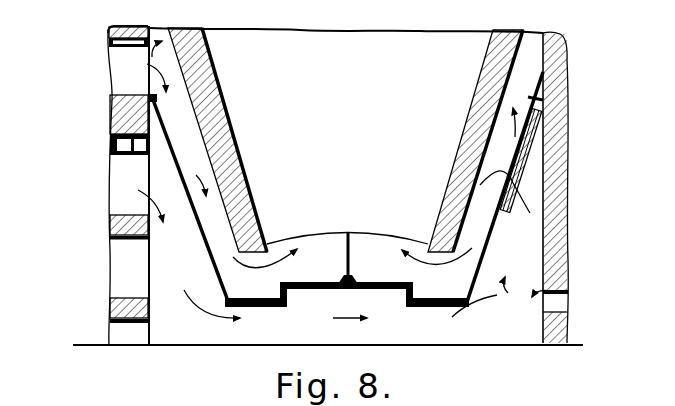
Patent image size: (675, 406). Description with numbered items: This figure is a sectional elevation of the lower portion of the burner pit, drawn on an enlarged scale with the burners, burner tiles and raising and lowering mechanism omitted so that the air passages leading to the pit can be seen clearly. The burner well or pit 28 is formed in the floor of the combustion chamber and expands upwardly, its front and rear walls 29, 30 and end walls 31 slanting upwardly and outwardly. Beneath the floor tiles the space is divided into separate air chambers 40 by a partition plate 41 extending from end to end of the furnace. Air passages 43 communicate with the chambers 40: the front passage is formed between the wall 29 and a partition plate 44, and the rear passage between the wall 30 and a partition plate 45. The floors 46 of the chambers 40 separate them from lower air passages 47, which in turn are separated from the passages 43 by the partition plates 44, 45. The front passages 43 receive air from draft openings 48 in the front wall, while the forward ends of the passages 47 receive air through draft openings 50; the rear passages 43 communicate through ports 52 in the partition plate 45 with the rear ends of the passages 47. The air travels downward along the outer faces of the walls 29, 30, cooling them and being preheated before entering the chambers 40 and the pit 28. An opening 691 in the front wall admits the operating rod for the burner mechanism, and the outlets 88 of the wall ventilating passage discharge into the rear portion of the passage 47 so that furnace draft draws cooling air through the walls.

The burner well or pit 28 is at (352, 128).
The front wall of the pit 29 is at (225, 168).
The rear wall of the pit 30 is at (460, 132).
The end wall of the pit 31 is at (373, 50).
The air chambers 40 is at (347, 252).
The partition plate 41 is at (350, 257).
The air passages 43 is at (183, 133).
The partition plate 44 is at (177, 161).
The partition plate 45 is at (490, 247).
The floors of the chambers 46 is at (307, 288).
The air passages 47 is at (403, 315).
The draft openings 48 is at (118, 65).
The draft openings 50 is at (117, 207).
The ports 52 is at (523, 168).
The opening 691 is at (125, 280).
The outlets 88 is at (556, 311).